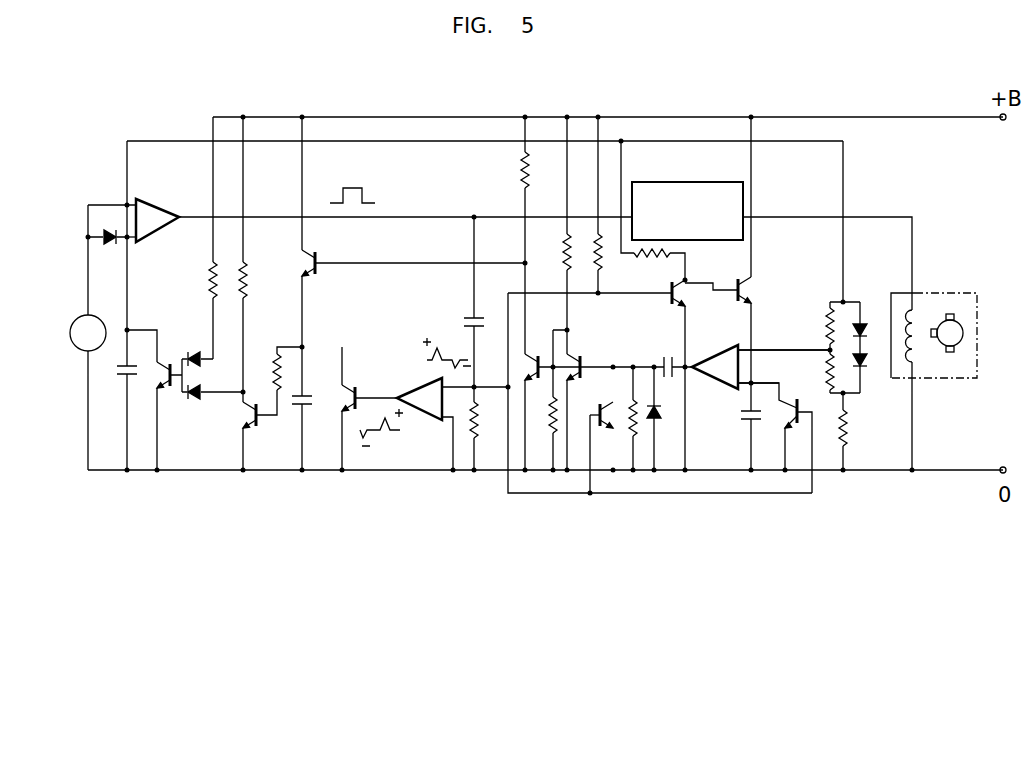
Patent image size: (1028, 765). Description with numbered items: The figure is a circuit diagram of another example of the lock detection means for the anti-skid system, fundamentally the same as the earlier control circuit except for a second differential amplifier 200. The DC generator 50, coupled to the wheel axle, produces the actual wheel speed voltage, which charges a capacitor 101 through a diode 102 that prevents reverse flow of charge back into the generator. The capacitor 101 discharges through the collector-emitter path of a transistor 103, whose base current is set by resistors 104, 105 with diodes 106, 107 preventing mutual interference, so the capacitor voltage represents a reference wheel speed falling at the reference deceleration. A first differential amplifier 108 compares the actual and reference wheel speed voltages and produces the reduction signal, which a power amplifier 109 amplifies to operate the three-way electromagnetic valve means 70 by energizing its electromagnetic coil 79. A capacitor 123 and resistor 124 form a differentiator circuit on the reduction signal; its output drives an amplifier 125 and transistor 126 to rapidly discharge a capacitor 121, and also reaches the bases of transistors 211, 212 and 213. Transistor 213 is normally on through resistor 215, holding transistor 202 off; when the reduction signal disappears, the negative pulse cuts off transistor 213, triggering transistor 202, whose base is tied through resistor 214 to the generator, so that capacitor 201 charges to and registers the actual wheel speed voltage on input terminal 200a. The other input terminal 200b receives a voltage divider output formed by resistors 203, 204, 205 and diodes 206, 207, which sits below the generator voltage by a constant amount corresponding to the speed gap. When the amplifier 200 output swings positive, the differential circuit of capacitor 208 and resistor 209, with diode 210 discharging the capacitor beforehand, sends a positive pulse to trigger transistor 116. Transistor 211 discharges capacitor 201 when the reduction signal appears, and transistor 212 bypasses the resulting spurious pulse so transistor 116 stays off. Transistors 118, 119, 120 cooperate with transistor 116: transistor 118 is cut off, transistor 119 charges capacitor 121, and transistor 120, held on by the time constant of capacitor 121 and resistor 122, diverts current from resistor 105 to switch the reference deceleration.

The DC generator 50 is at (70, 333).
The three-way electromagnetic valve means 70 is at (960, 293).
The electromagnetic coil 79 is at (935, 340).
The capacitor 101 is at (117, 372).
The diode 102 is at (107, 229).
The transistor 103 is at (170, 388).
The resistor 104 is at (208, 283).
The resistor 105 is at (246, 270).
The diode 106 is at (194, 352).
The diode 107 is at (199, 400).
The first differential amplifier 108 is at (150, 198).
The power amplifier 109 is at (690, 182).
The transistor 116 is at (576, 357).
The transistor 118 is at (536, 367).
The transistor 119 is at (306, 283).
The transistor 120 is at (253, 428).
The capacitor 121 is at (312, 404).
The resistor 122 is at (275, 365).
The capacitor 123 is at (468, 322).
The resistor 124 is at (480, 430).
The amplifier 125 is at (412, 390).
The transistor 126 is at (354, 385).
The second differential amplifier 200 is at (712, 355).
The input terminal 200a is at (734, 396).
The input terminal 200b is at (748, 350).
The capacitor 201 is at (742, 420).
The transistor 202 is at (746, 285).
The resistor 203 is at (825, 322).
The resistor 204 is at (825, 375).
The resistor 205 is at (848, 430).
The diode 206 is at (866, 325).
The diode 207 is at (866, 362).
The capacitor 208 is at (668, 355).
The resistor 209 is at (633, 400).
The diode 210 is at (662, 413).
The transistor 211 is at (820, 405).
The transistor 212 is at (600, 418).
The transistor 213 is at (668, 308).
The resistor 214 is at (670, 253).
The resistor 215 is at (601, 260).